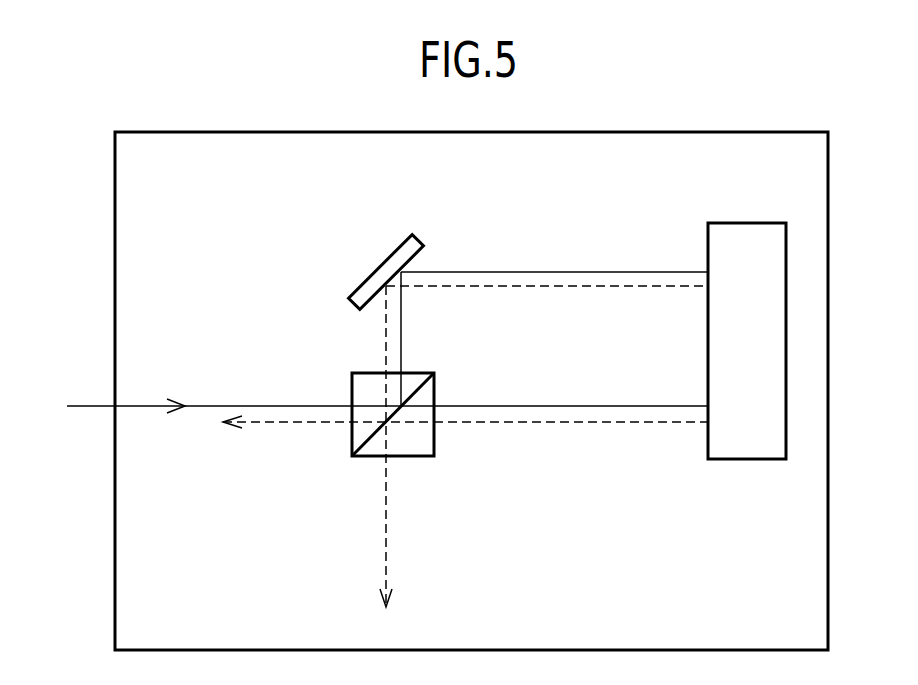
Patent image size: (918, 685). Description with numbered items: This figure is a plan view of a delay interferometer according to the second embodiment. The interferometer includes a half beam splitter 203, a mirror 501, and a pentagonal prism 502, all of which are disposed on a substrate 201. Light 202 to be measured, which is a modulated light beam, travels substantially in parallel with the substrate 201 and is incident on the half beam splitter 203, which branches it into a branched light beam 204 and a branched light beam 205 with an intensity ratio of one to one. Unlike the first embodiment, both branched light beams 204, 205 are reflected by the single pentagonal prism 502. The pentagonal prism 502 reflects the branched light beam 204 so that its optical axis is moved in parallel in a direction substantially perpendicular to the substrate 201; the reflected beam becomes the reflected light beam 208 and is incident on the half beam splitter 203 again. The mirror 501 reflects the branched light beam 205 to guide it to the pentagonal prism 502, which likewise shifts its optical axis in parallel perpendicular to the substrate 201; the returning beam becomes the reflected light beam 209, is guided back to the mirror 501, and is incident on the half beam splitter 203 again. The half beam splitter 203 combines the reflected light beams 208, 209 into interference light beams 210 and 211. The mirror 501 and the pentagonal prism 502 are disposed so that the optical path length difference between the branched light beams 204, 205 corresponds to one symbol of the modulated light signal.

The substrate 201 is at (115, 264).
The light to be measured 202 is at (93, 407).
The half beam splitter 203 is at (413, 457).
The branched light beam 204 is at (600, 407).
The branched light beam 205 is at (522, 272).
The reflected light beam 208 is at (600, 423).
The reflected light beam 209 is at (522, 287).
The interference light beam 210 is at (288, 423).
The interference light beam 211 is at (385, 543).
The mirror 501 is at (367, 275).
The pentagonal prism 502 is at (749, 460).